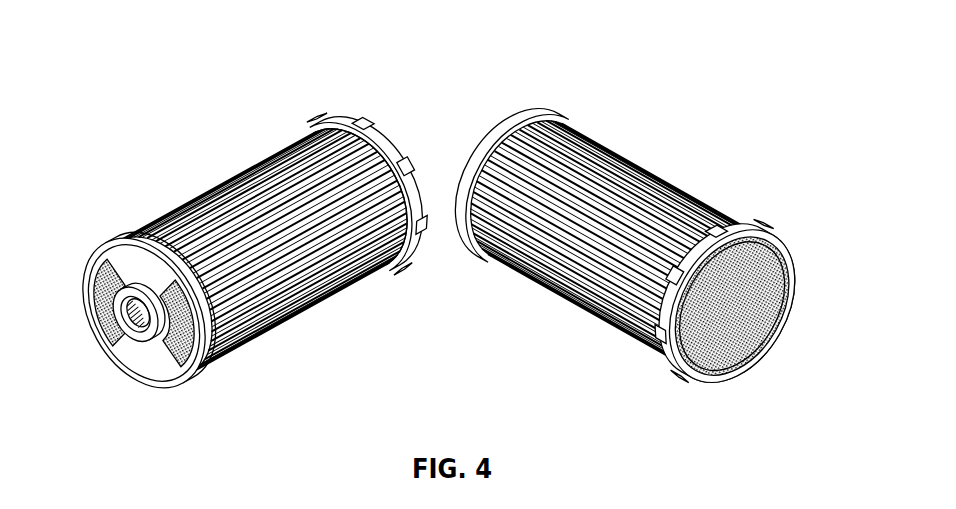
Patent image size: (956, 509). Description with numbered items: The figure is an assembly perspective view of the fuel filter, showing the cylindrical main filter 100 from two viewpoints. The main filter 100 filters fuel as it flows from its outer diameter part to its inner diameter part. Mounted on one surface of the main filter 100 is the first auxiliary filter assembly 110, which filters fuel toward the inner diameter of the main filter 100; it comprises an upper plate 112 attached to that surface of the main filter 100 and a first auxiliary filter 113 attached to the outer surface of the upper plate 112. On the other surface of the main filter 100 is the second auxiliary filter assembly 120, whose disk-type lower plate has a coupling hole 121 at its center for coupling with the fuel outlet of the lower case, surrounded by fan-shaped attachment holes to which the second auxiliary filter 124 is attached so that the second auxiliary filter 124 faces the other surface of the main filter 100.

The main filter 100 is at (226, 159).
The first auxiliary filter assembly 110 is at (338, 104).
The upper plate 112 is at (382, 143).
The first auxiliary filter 113 is at (788, 253).
The second auxiliary filter assembly 120 is at (98, 231).
The coupling hole 121 is at (133, 349).
The second auxiliary filter 124 is at (113, 355).